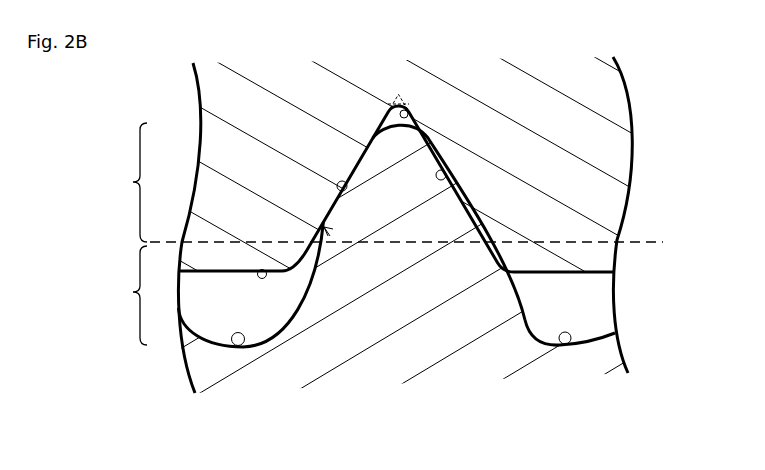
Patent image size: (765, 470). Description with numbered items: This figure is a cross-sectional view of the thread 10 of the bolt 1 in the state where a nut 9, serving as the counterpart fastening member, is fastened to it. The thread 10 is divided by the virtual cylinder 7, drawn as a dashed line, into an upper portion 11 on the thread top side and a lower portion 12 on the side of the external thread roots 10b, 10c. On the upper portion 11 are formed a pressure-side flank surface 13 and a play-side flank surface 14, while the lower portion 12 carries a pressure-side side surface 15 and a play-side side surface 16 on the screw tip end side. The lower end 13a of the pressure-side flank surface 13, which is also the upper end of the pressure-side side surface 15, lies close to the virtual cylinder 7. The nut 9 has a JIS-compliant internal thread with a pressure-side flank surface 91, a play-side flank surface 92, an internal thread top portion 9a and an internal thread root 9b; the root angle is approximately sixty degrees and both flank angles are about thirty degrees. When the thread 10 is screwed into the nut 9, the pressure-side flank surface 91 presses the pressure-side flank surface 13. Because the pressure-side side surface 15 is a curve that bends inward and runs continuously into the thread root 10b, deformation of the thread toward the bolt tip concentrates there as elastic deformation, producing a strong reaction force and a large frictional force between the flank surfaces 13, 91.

The bolt 1 is at (617, 352).
The virtual cylinder 7 is at (167, 242).
The nut 9 is at (614, 108).
The internal thread top portion 9a is at (264, 269).
The internal thread root 9b is at (420, 108).
The pressure-side flank surface 91 is at (340, 181).
The play-side flank surface 92 is at (465, 170).
The thread 10 is at (478, 238).
The external thread root 10b is at (233, 345).
The external thread root 10c is at (562, 344).
The upper portion 11 is at (125, 182).
The lower portion 12 is at (126, 295).
The pressure-side flank surface 13 is at (358, 173).
The lower end of pressure-side flank surface 13a is at (330, 236).
The play-side flank surface 14 is at (457, 203).
The pressure-side side surface 15 is at (282, 325).
The play-side side surface 16 is at (518, 305).